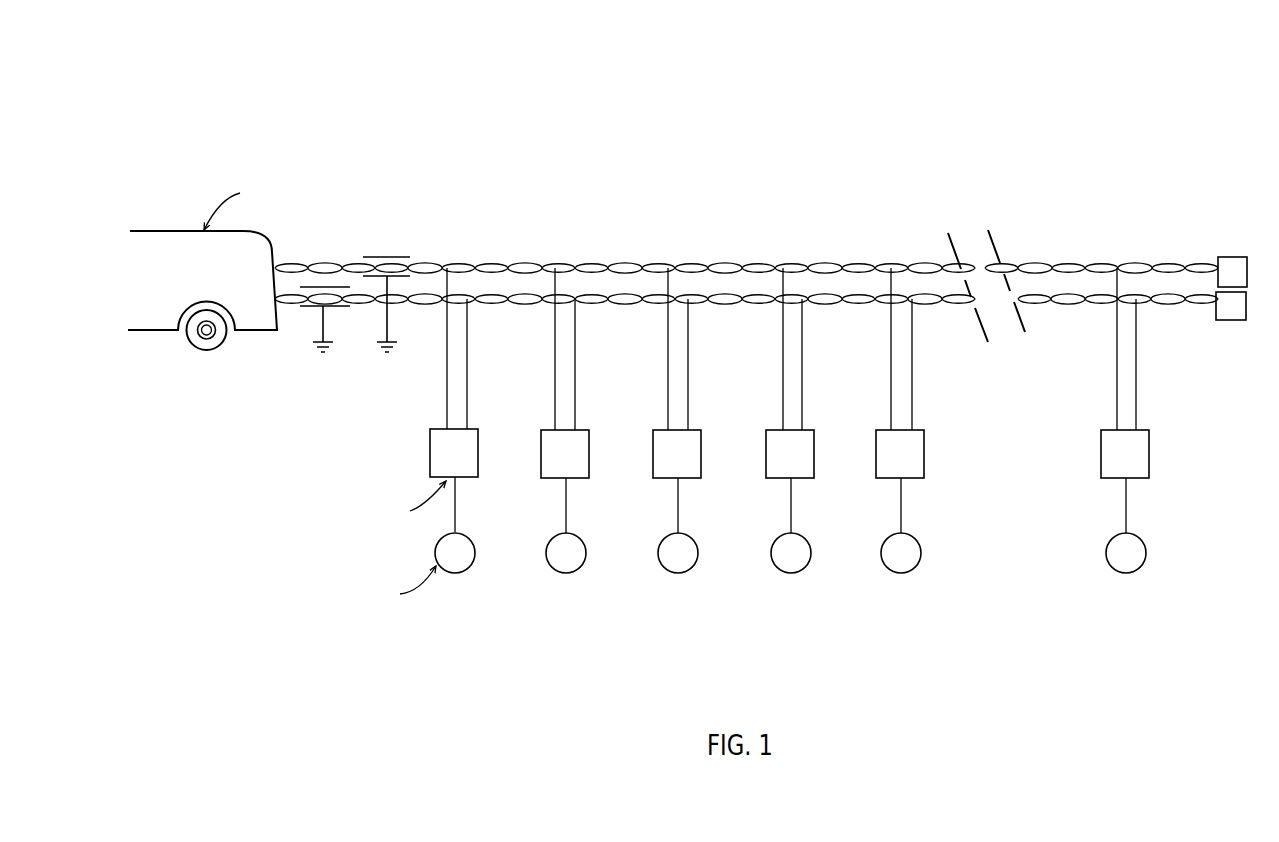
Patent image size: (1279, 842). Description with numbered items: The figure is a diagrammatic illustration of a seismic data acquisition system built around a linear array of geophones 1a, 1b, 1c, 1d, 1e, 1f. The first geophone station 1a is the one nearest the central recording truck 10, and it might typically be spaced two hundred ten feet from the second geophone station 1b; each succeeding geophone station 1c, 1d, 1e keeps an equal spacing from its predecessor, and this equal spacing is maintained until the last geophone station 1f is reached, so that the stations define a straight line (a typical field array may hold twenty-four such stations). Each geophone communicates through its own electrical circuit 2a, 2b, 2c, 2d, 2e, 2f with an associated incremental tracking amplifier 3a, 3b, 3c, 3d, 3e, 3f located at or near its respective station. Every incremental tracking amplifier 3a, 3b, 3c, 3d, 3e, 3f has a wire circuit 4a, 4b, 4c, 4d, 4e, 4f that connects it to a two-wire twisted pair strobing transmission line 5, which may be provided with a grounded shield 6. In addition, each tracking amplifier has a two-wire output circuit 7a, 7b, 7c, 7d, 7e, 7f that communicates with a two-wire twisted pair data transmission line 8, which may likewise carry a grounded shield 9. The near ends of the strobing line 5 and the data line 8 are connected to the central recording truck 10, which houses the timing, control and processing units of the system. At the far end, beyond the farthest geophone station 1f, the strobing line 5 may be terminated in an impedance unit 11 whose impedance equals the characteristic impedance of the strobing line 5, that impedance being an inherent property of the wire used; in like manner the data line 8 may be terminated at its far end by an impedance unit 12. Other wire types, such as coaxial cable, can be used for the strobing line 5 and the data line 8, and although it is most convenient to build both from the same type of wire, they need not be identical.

The geophone 1a is at (380, 542).
The geophone 1b is at (566, 553).
The geophone 1c is at (678, 553).
The geophone 1d is at (791, 553).
The geophone 1e is at (901, 553).
The geophone 1f is at (1126, 553).
The electrical circuit 2a is at (458, 506).
The electrical circuit 2b is at (569, 506).
The electrical circuit 2c is at (681, 506).
The electrical circuit 2d is at (794, 506).
The electrical circuit 2e is at (903, 506).
The electrical circuit 2f is at (1129, 506).
The incremental tracking amplifier 3a is at (454, 453).
The incremental tracking amplifier 3b is at (565, 454).
The incremental tracking amplifier 3c is at (677, 454).
The incremental tracking amplifier 3d is at (790, 454).
The incremental tracking amplifier 3e is at (900, 454).
The incremental tracking amplifier 3f is at (1125, 454).
The wire circuit 4a is at (469, 396).
The wire circuit 4b is at (577, 360).
The wire circuit 4c is at (690, 396).
The wire circuit 4d is at (804, 362).
The wire circuit 4e is at (914, 400).
The wire circuit 4f is at (1138, 400).
The strobing transmission line 5 is at (432, 306).
The grounded shield 6 is at (338, 309).
The two-wire output circuit 7a is at (445, 396).
The two-wire output circuit 7b is at (553, 358).
The two-wire output circuit 7c is at (666, 396).
The two-wire output circuit 7d is at (781, 360).
The two-wire output circuit 7e is at (889, 397).
The two-wire output circuit 7f is at (1115, 398).
The data transmission line 8 is at (518, 262).
The grounded shield 9 is at (389, 252).
The central recording truck 10 is at (269, 234).
The impedance unit 11 is at (1231, 306).
The impedance unit 12 is at (1232, 272).